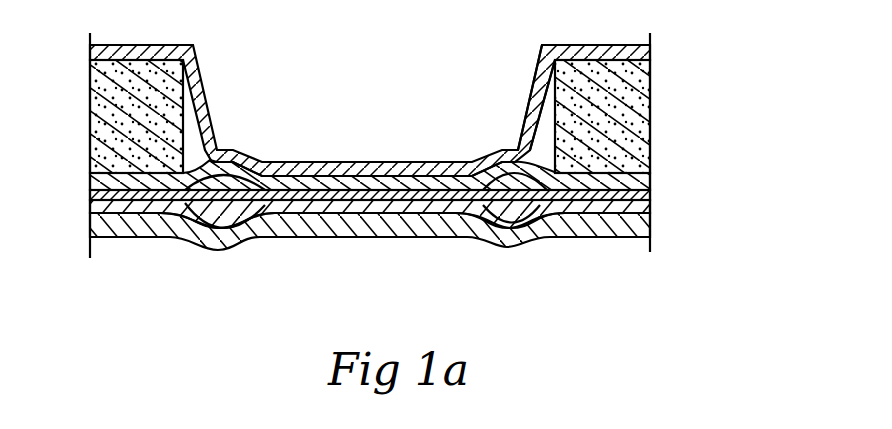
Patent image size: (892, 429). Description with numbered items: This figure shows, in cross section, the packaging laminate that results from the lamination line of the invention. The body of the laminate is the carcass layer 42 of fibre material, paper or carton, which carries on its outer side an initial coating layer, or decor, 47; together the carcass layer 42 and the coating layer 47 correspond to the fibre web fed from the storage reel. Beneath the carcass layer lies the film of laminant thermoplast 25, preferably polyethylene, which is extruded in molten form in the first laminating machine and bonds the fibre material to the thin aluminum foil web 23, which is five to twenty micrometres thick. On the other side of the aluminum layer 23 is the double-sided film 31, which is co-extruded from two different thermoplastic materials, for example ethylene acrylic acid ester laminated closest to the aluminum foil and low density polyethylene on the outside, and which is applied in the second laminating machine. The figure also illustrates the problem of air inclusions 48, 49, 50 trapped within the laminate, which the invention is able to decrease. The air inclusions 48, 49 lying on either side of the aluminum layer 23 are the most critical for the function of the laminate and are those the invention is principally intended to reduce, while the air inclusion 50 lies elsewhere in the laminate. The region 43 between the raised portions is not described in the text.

The initial coating layer (decor) 47 is at (650, 47).
The carcass layer 42 is at (650, 98).
The air inclusion 50 is at (547, 110).
The air inclusion 48 is at (512, 178).
The opening between gates 43 is at (378, 109).
The laminant thermoplast film 25 is at (652, 180).
The aluminum foil web 23 is at (648, 197).
The double-sided film 31 is at (650, 208).
The air inclusion 49 is at (512, 205).